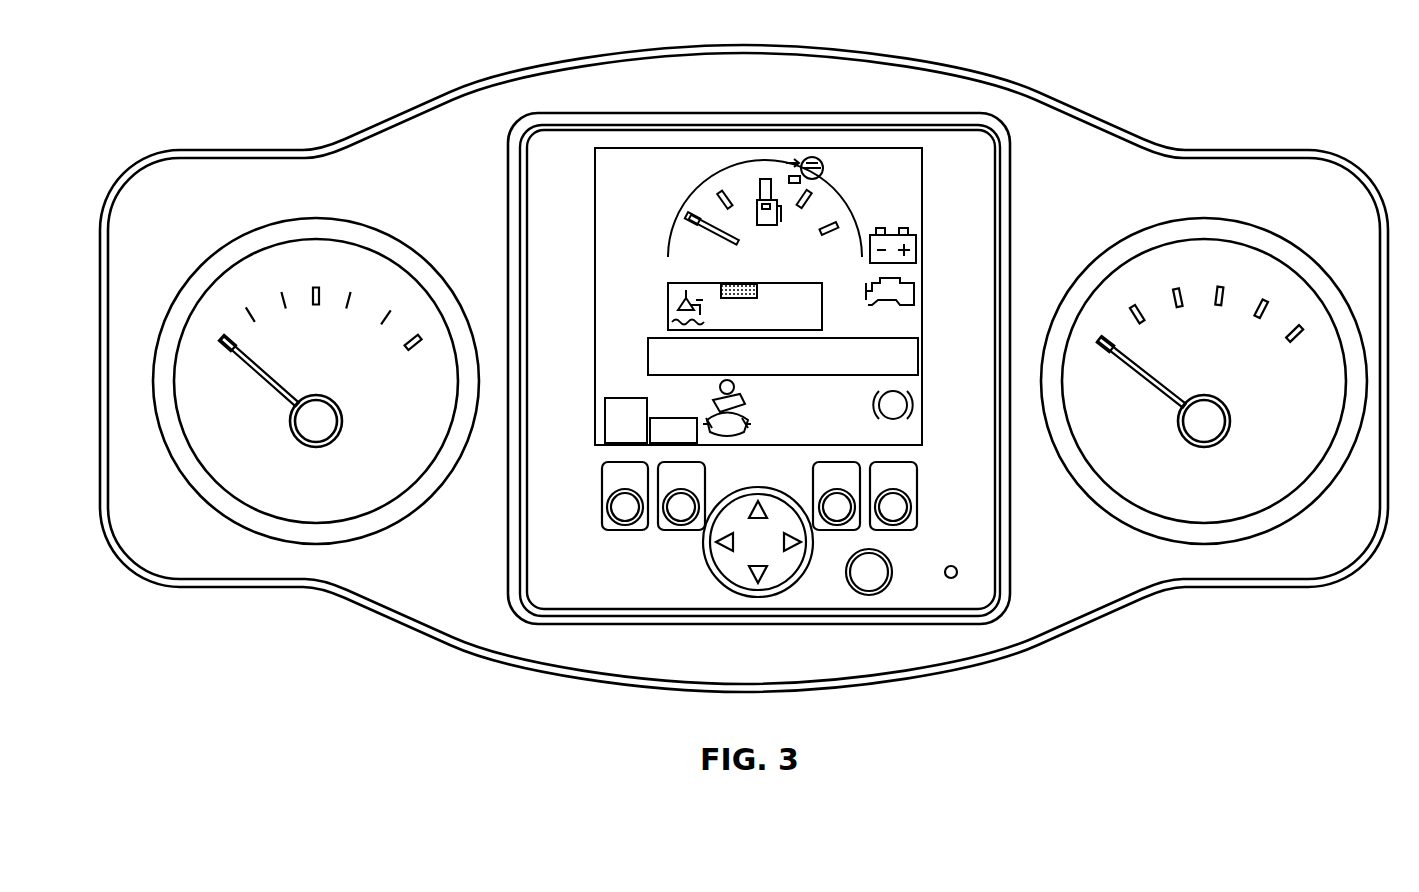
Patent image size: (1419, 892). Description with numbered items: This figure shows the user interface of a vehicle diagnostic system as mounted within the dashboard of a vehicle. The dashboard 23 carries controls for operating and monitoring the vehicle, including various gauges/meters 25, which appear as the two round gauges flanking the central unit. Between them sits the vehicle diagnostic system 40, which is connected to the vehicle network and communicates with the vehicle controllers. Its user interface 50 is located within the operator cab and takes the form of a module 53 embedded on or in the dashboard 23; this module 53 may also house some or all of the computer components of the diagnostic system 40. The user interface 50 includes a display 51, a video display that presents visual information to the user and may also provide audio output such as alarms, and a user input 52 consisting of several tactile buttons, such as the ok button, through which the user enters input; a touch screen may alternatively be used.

The dashboard 23 is at (452, 127).
The gauges/meters 25 is at (300, 490).
The vehicle diagnostic system 40 is at (1022, 182).
The user interface 50 is at (974, 163).
The display 51 is at (663, 236).
The user input 52 is at (899, 574).
The module 53 is at (757, 222).